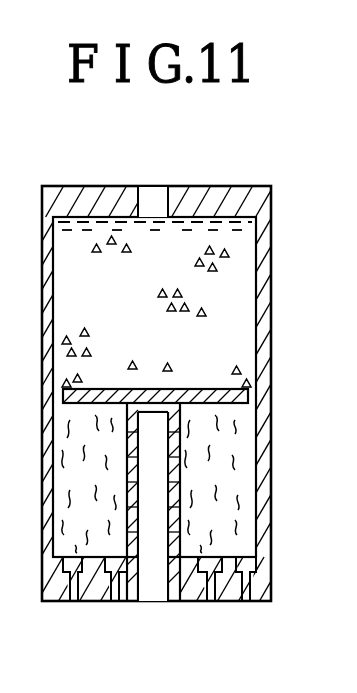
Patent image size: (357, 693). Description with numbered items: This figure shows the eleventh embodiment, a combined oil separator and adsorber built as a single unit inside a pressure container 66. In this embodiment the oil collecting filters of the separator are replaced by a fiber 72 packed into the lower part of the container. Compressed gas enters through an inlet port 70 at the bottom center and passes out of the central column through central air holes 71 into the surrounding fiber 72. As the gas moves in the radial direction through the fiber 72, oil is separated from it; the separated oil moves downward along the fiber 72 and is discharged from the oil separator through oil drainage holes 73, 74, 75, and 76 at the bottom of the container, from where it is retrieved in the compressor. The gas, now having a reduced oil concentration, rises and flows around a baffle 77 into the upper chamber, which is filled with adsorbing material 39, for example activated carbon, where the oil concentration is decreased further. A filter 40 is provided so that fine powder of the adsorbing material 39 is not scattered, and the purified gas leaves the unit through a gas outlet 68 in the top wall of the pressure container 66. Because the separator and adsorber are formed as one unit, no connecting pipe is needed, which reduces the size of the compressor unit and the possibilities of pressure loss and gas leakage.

The adsorbing material 39 is at (84, 298).
The filter 40 is at (69, 216).
The pressure container 66 is at (272, 230).
The gas outlet 68 is at (153, 204).
The inlet port 70 is at (153, 601).
The central air holes 71 is at (172, 488).
The fiber 72 is at (167, 550).
The oil drainage hole 73 is at (115, 601).
The oil drainage hole 74 is at (211, 601).
The oil drainage hole 75 is at (73, 601).
The oil drainage hole 76 is at (246, 601).
The baffle 77 is at (100, 389).